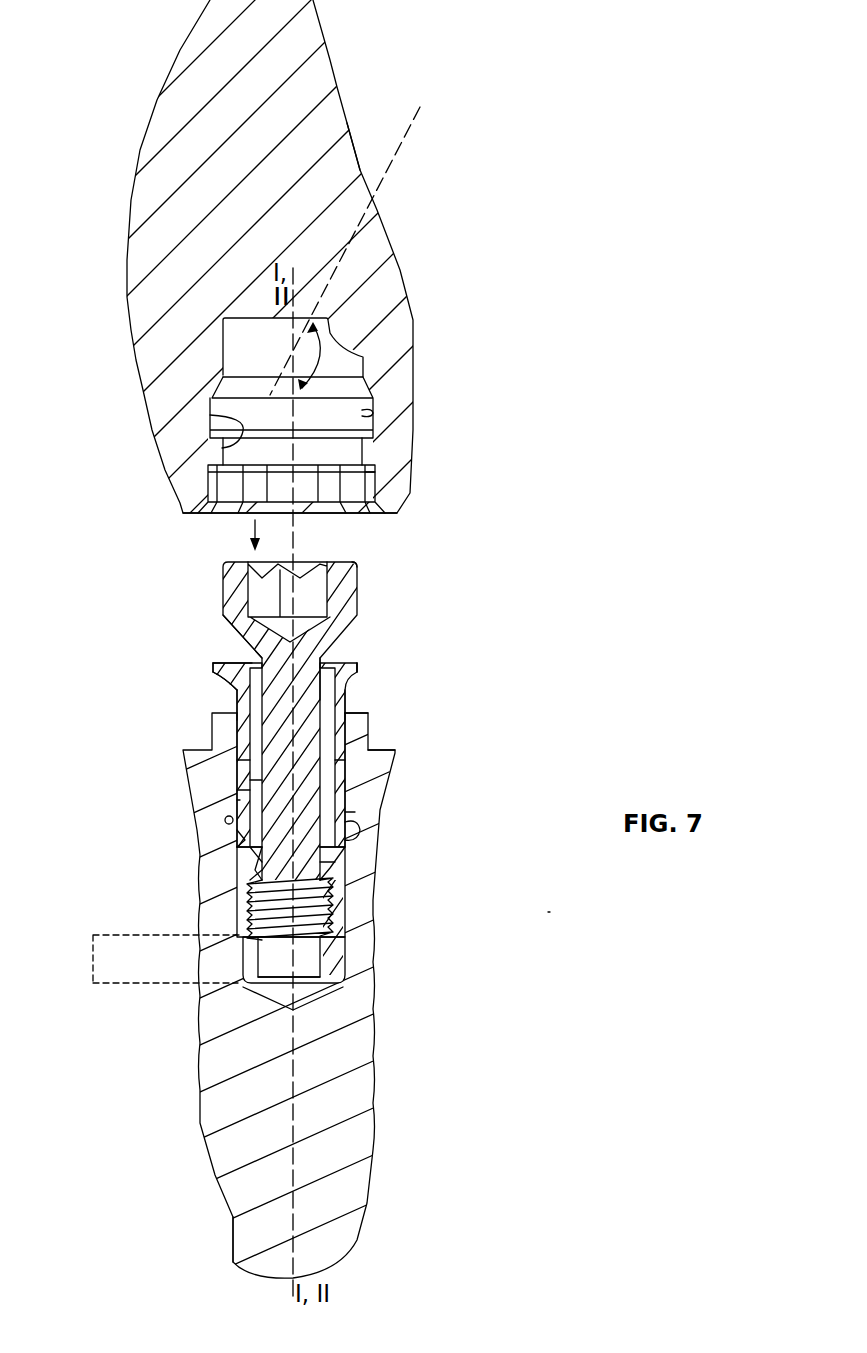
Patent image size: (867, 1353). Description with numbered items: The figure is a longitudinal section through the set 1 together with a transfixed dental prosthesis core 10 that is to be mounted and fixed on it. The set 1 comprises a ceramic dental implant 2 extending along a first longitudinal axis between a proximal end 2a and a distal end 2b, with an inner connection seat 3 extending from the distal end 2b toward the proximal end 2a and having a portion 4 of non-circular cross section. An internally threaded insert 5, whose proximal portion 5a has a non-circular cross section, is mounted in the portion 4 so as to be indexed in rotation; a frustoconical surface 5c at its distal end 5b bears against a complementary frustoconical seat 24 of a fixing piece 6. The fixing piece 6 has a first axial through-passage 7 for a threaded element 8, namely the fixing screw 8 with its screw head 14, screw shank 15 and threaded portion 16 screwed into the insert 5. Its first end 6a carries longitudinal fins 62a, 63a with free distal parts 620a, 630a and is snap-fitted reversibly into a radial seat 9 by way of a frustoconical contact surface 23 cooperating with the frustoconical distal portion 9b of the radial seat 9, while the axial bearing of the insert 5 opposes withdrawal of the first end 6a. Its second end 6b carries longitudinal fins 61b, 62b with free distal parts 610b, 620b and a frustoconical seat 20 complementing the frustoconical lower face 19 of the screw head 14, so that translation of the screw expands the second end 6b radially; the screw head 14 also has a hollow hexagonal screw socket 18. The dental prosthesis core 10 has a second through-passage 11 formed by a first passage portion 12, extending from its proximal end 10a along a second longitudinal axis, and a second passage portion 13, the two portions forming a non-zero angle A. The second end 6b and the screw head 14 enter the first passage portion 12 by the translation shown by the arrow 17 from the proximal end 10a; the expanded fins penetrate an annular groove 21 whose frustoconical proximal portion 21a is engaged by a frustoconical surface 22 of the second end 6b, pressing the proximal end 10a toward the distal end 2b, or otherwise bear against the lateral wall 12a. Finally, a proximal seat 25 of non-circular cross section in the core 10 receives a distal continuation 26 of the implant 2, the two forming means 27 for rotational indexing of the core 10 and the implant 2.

The set 1 is at (547, 912).
The dental implant 2 is at (430, 1089).
The proximal end 2a is at (247, 1231).
The distal end 2b is at (393, 753).
The inner connection seat 3 is at (247, 788).
The portion of non-circular cross section 4 is at (93, 959).
The internally threaded insert 5 is at (343, 951).
The proximal portion of non-circular cross section 5a is at (252, 961).
The distal end 5b is at (242, 874).
The frustoconical surface 5c is at (255, 873).
The fixing piece 6 is at (237, 740).
The first end 6a is at (234, 800).
The second end 6b is at (398, 650).
The first axial through-passage 7 is at (340, 657).
The fixing screw 8 is at (362, 604).
The radial seat 9 is at (352, 830).
The frustoconical distal portion 9b is at (352, 812).
The transfixed dental prosthesis core 10 is at (118, 262).
The proximal end 10a is at (390, 502).
The second through-passage 11 is at (247, 340).
The first passage portion 12 is at (247, 453).
The lateral wall 12a is at (210, 418).
The second passage portion 13 is at (370, 277).
The screw head 14 is at (356, 570).
The screw shank 15 is at (248, 763).
The threaded portion 16 is at (320, 864).
The arrow 17 is at (252, 542).
The hollow screw socket 18 is at (260, 583).
The frustoconical lower face 19 is at (232, 633).
The frustoconical seat 20 is at (250, 663).
The annular groove 21 is at (363, 413).
The frustoconical proximal portion 21a is at (363, 441).
The frustoconical surface 22 is at (224, 679).
The frustoconical contact surface 23 is at (225, 821).
The frustoconical seat 24 is at (247, 856).
The proximal seat 25 is at (227, 485).
The distal continuation 26 is at (358, 723).
The means for rotational indexing 27 is at (374, 489).
The longitudinal fin 61b is at (236, 708).
The longitudinal fin 62a is at (333, 778).
The longitudinal fin 62b is at (343, 692).
The longitudinal fin 63a is at (235, 795).
The free distal part 610b is at (212, 666).
The free distal part 620a is at (352, 834).
The free distal part 620b is at (362, 668).
The free distal part 630a is at (232, 838).
The angle A is at (320, 358).